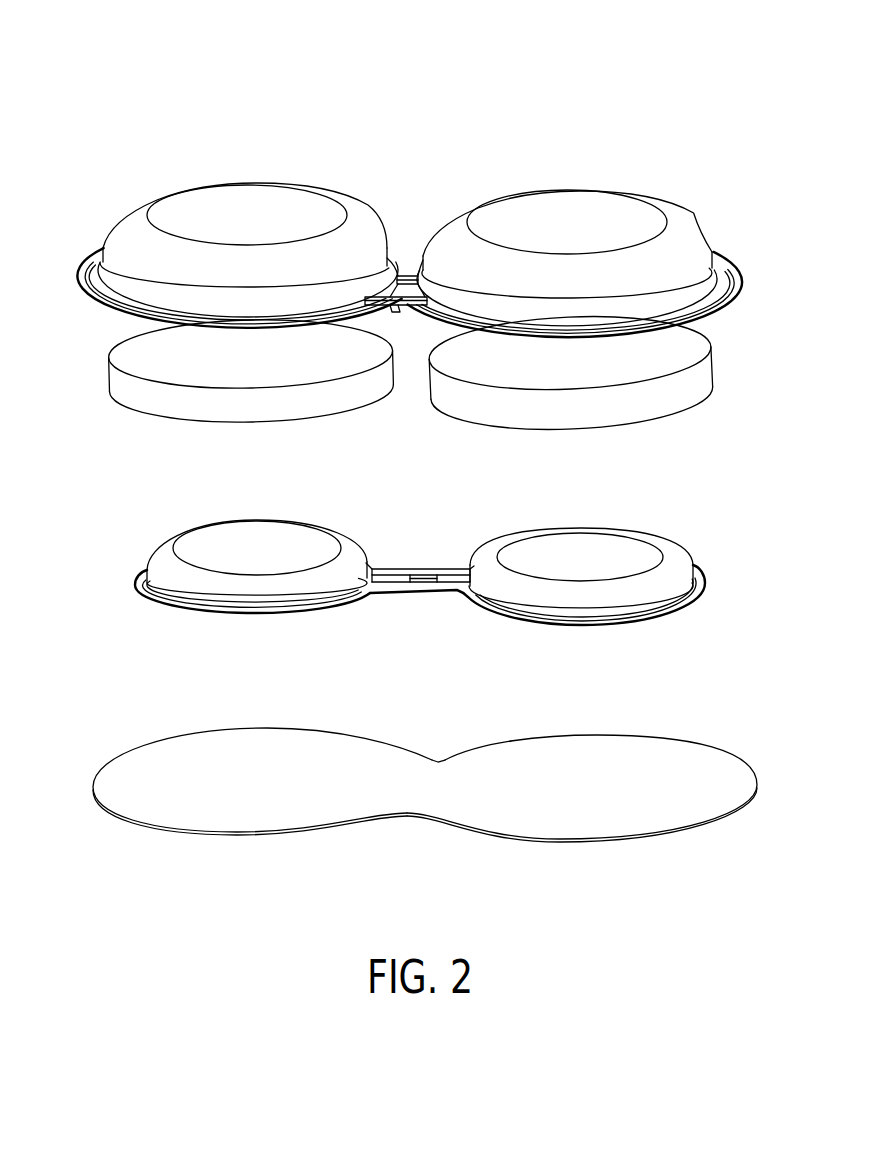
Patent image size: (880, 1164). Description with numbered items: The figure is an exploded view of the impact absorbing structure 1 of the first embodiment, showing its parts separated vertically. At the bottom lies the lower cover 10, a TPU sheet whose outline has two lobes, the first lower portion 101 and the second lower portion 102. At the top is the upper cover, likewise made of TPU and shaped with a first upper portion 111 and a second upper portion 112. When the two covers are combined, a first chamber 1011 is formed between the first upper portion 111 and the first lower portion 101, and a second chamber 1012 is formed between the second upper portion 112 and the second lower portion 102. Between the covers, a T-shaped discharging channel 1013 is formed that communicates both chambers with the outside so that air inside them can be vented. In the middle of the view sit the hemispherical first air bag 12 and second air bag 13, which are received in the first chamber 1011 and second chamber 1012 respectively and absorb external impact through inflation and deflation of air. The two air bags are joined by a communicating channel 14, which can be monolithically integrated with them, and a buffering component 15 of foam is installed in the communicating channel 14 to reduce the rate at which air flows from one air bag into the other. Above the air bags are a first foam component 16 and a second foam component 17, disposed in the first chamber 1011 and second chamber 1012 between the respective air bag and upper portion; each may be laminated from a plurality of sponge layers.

The impact absorbing structure 1 is at (110, 76).
The lower cover 10 is at (425, 751).
The first lower portion 101 is at (640, 742).
The second lower portion 102 is at (193, 743).
The first upper portion 111 is at (677, 218).
The second upper portion 112 is at (338, 200).
The first chamber 1011 is at (705, 320).
The second chamber 1012 is at (115, 320).
The discharging channel 1013 is at (413, 300).
The first air bag 12 is at (638, 543).
The second air bag 13 is at (193, 542).
The communicating channel 14 is at (455, 577).
The buffering component 15 is at (420, 576).
The first foam component 16 is at (692, 396).
The second foam component 17 is at (333, 407).